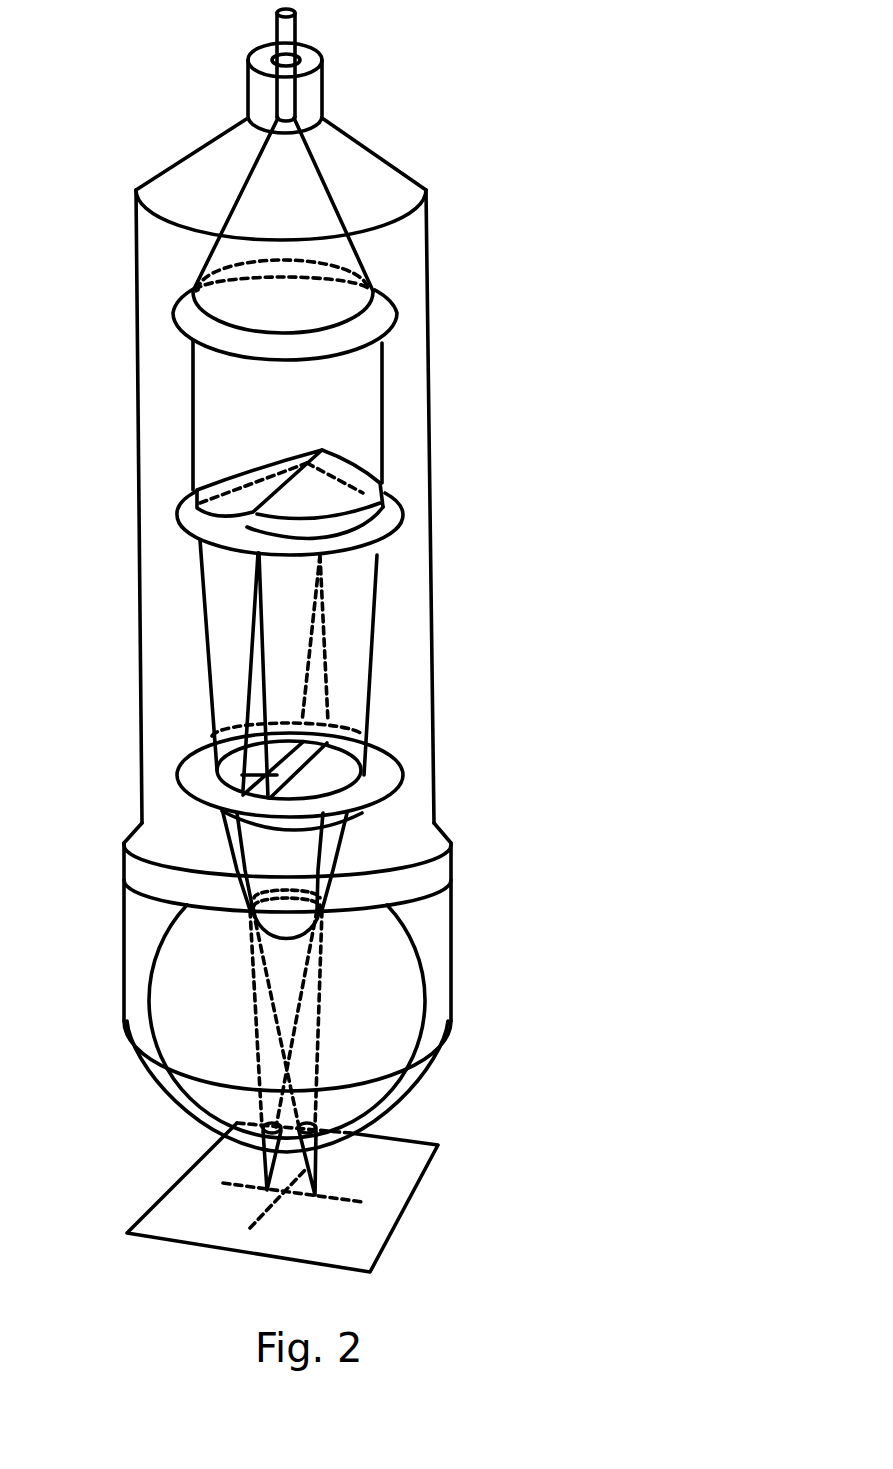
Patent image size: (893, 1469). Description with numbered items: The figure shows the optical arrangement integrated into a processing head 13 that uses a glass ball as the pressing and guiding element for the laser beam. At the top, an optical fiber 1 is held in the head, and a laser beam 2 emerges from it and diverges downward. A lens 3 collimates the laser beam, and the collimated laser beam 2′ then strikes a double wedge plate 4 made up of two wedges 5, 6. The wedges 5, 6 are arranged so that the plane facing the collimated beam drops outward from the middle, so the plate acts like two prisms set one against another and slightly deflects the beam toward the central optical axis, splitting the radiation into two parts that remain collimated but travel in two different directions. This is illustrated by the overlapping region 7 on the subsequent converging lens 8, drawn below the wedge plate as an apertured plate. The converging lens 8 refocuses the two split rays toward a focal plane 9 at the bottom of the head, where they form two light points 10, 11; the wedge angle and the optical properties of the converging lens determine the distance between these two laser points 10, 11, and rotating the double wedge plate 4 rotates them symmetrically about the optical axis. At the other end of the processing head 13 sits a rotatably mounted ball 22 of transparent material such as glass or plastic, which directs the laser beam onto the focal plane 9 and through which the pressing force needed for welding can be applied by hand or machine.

The optical fiber 1 is at (292, 30).
The laser beam 2 is at (350, 262).
The collimated laser beam 2′ is at (370, 440).
The lens 3 is at (383, 322).
The double wedge plate 4 is at (387, 522).
The wedge 5 is at (235, 493).
The wedge 6 is at (353, 500).
The overlapping region 7 is at (240, 775).
The converging lens 8 is at (393, 770).
The focal plane 9 is at (393, 1205).
The light point 10 is at (267, 1188).
The light point 11 is at (317, 1190).
The processing head 13 is at (430, 370).
The ball 22 is at (408, 1003).